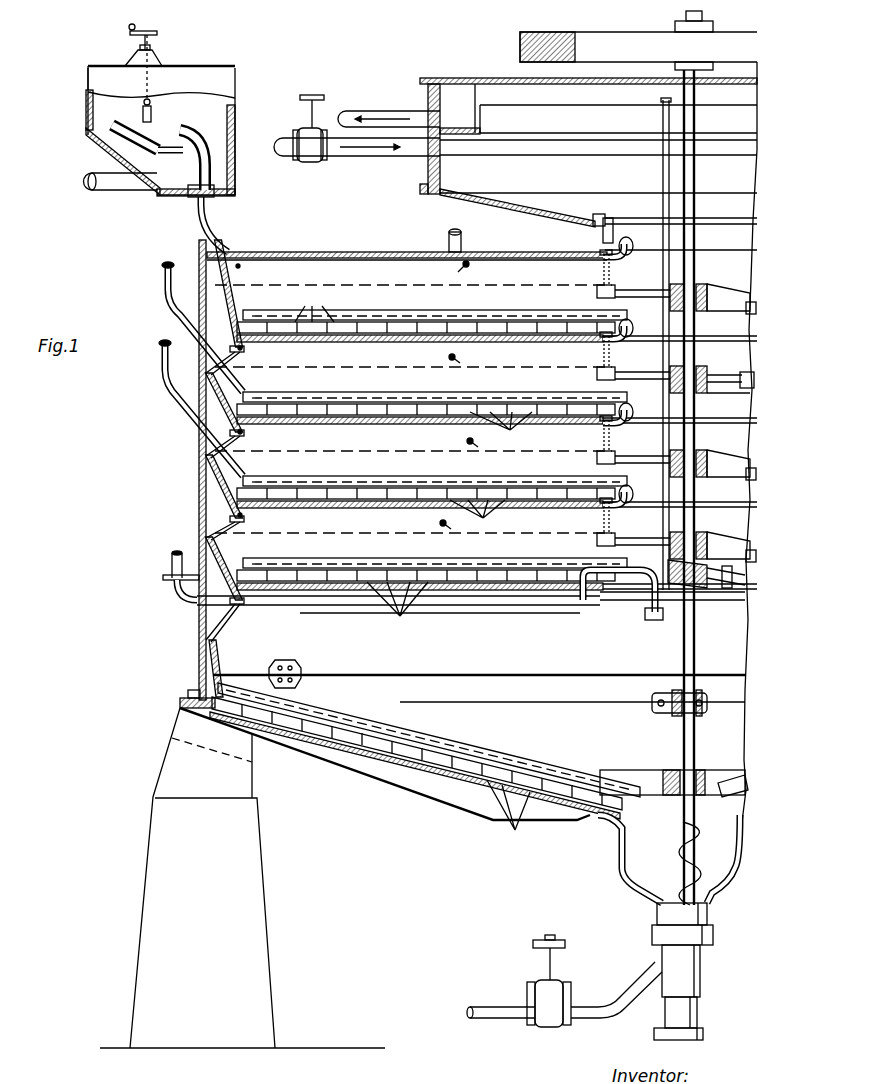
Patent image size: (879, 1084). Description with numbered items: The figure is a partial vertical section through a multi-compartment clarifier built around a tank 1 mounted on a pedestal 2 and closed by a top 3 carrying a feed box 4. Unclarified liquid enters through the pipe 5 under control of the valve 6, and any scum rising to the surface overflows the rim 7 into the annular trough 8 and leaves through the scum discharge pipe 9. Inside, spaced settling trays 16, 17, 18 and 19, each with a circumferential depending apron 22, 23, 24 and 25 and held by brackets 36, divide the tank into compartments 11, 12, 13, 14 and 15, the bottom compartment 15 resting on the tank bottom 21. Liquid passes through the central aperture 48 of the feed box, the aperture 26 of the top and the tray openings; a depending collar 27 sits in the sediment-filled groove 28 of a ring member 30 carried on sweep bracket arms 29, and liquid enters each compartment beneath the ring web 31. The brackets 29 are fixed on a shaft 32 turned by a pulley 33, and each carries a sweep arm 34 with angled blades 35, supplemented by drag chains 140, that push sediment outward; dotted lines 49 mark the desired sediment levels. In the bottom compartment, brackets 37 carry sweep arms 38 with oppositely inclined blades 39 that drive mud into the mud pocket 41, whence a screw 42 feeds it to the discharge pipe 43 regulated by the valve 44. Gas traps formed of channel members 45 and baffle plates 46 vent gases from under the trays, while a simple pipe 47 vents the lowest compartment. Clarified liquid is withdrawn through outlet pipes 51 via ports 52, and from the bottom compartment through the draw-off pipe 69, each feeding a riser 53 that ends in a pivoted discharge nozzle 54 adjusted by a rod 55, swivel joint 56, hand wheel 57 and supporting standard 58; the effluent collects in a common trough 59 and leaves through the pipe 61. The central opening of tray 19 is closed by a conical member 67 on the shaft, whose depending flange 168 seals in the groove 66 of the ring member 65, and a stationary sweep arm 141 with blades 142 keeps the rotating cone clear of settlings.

The tank 1 is at (197, 650).
The pedestal 2 is at (150, 846).
The top 3 is at (285, 254).
The feed box 4 is at (430, 196).
The pipe 5 is at (350, 152).
The valve 6 is at (305, 158).
The overflow rim 7 is at (498, 115).
The annular trough 8 is at (458, 110).
The scum discharge pipe 9 is at (368, 114).
The compartment 11 is at (435, 292).
The compartment 12 is at (435, 375).
The compartment 13 is at (435, 458).
The compartment 14 is at (435, 542).
The bottom compartment 15 is at (306, 614).
The settling tray 16 is at (380, 342).
The settling tray 17 is at (380, 424).
The settling tray 18 is at (384, 508).
The settling tray 19 is at (332, 606).
The bottom 21 is at (352, 745).
The depending apron 22 is at (228, 381).
The depending apron 23 is at (230, 463).
The depending apron 24 is at (232, 546).
The depending apron 25 is at (220, 634).
The central aperture 26 is at (696, 241).
The collar 27 is at (603, 282).
The groove 28 is at (597, 292).
The sweep bracket arms 29 is at (693, 423).
The ring member 30 is at (613, 280).
The ring web 31 is at (597, 291).
The shaft 32 is at (696, 123).
The pulley 33 is at (605, 40).
The sweep arm 34 is at (380, 322).
The blades 35 is at (497, 525).
The brackets 36 is at (296, 680).
The brackets 37 is at (607, 770).
The sweep arms 38 is at (508, 757).
The blades 39 is at (417, 773).
The mud pocket 41 is at (632, 868).
The screw 42 is at (684, 848).
The discharge pipe 43 is at (496, 1006).
The valve 44 is at (540, 992).
The channel members 45 is at (620, 258).
The baffle plates 46 is at (610, 252).
The pipe 47 is at (662, 184).
The central aperture 48 is at (610, 228).
The dotted lines 49 is at (322, 285).
The clarified liquid outlet pipes 51 is at (215, 230).
The outlet port 52 is at (443, 524).
The riser 53 is at (213, 203).
The discharge nozzle 54 is at (122, 140).
The rod 55 is at (150, 78).
The swivel joint 56 is at (152, 110).
The hand wheel 57 is at (146, 30).
The supporting standard 58 is at (158, 58).
The trough 59 is at (140, 165).
The pipe 61 is at (90, 190).
The ring member 65 is at (728, 586).
The groove 66 is at (648, 600).
The conical member 67 is at (712, 588).
The draw-off pipe 69 is at (460, 613).
The drag chains 140 is at (314, 305).
The stationary sweep arm 141 is at (580, 602).
The blades 142 is at (652, 622).
The connecting pipe 168 is at (608, 578).